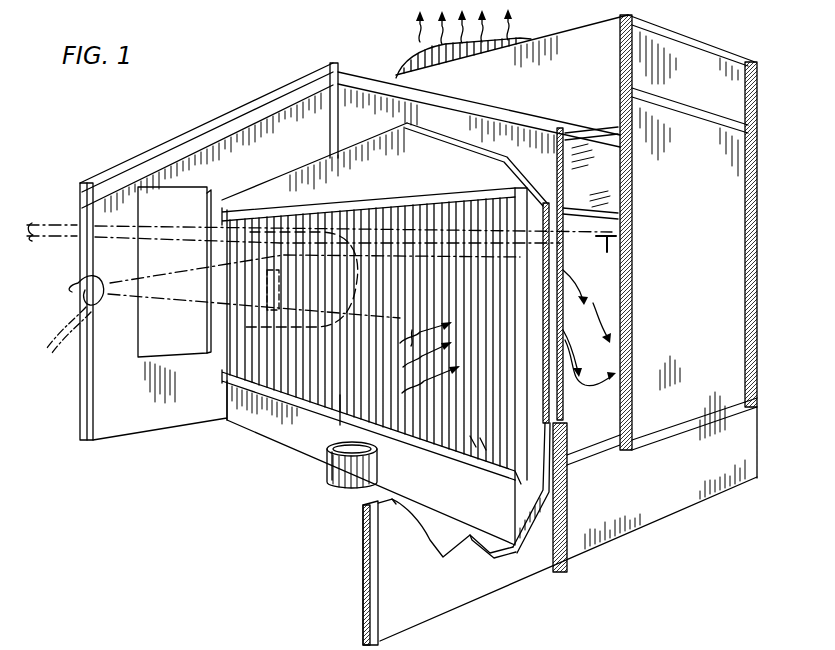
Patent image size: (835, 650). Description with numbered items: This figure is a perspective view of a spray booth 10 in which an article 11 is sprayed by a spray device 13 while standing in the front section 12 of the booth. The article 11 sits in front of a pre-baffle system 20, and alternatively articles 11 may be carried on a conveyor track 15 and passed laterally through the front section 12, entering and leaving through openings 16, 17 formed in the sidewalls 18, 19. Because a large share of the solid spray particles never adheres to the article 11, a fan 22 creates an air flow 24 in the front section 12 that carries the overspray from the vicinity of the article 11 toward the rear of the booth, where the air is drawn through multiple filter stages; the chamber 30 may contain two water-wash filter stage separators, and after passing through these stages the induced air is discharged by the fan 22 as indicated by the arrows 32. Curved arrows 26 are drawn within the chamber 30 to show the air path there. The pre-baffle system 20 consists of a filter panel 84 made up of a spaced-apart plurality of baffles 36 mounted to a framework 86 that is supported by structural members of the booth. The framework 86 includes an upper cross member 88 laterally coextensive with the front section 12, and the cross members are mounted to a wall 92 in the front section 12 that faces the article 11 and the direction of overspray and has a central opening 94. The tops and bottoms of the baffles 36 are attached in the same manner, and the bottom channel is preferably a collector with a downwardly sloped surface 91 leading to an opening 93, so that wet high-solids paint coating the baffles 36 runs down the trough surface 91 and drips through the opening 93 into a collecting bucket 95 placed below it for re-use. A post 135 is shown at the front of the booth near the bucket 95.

The spray booth 10 is at (241, 97).
The article 11 is at (262, 305).
The front section 12 is at (143, 199).
The spray device 13 is at (65, 288).
The conveyor track 15 is at (398, 265).
The opening 16 is at (172, 345).
The opening 17 is at (438, 535).
The sidewall 18 is at (148, 428).
The sidewall 19 is at (509, 580).
The pre-baffle system 20 is at (327, 456).
The fan 22 is at (394, 64).
The air flow 24 is at (430, 346).
The air flow arrows 26 is at (643, 365).
The chamber 30 is at (740, 312).
The arrows 32 is at (508, 30).
The baffles 36 is at (490, 452).
The filter panel 84 is at (281, 409).
The framework 86 is at (320, 206).
The cross member 88 is at (358, 202).
The downwardly sloped surface 91 is at (408, 449).
The wall 92 is at (524, 512).
The opening 93 is at (351, 440).
The central opening 94 is at (527, 215).
The collecting bucket 95 is at (333, 479).
The post 135 is at (360, 508).